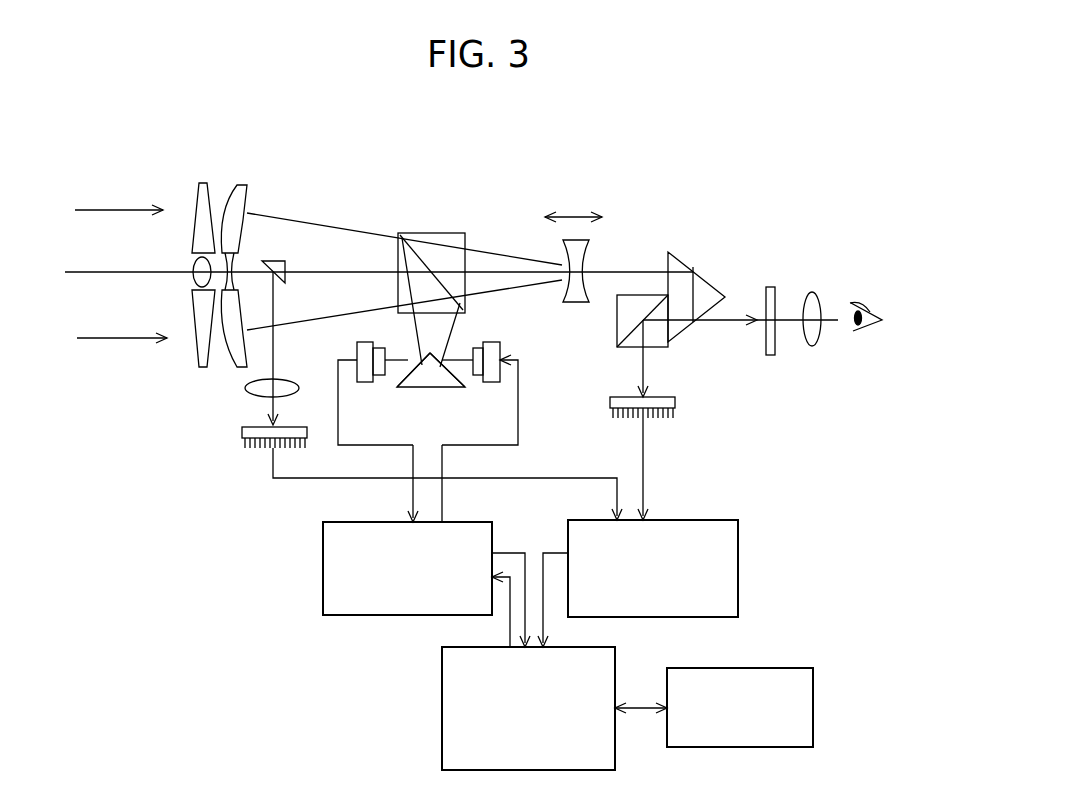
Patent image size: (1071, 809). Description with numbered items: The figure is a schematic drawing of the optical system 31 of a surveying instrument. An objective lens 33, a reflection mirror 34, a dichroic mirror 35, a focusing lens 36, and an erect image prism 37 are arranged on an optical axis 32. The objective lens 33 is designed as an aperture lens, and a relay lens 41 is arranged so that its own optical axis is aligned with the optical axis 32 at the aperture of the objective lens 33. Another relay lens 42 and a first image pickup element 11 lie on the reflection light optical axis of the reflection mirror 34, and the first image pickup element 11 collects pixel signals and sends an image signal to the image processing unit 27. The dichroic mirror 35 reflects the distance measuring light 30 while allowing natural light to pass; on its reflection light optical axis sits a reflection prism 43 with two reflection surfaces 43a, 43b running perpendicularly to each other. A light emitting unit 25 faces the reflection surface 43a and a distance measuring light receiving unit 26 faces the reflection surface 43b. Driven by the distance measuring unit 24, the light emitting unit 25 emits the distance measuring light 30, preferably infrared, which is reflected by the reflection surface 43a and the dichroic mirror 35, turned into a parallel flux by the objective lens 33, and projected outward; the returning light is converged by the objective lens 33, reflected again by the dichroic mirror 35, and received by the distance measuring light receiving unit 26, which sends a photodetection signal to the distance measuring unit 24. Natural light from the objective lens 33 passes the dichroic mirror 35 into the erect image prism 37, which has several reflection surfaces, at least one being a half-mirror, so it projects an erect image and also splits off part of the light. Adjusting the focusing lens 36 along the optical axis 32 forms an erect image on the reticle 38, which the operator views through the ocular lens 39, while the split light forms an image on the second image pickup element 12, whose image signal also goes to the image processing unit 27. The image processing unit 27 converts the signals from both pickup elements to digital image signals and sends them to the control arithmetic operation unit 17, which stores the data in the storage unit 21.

The distance measuring light 30 is at (120, 209).
The relay lens 41 is at (186, 280).
The objective lens 33 is at (223, 178).
The reflection mirror 34 is at (276, 260).
The optical system 31 is at (396, 203).
The dichroic mirror 35 is at (432, 233).
The focusing lens 36 is at (590, 252).
The optical axis 32 is at (647, 272).
The erect image prism 37 is at (702, 272).
The reticle 38 is at (776, 290).
The ocular lens 39 is at (815, 295).
The relay lens 42 is at (283, 379).
The first image pickup element 11 is at (243, 432).
The second image pickup element 12 is at (675, 403).
The distance measuring light receiving unit 26 is at (363, 383).
The light emitting unit 25 is at (487, 383).
The reflection prism 43 is at (441, 388).
The reflection surface 43a is at (452, 362).
The reflection surface 43b is at (410, 362).
The distance measuring unit 24 is at (323, 542).
The image processing unit 27 is at (738, 542).
The control arithmetic operation unit 17 is at (442, 690).
The storage unit 21 is at (813, 678).